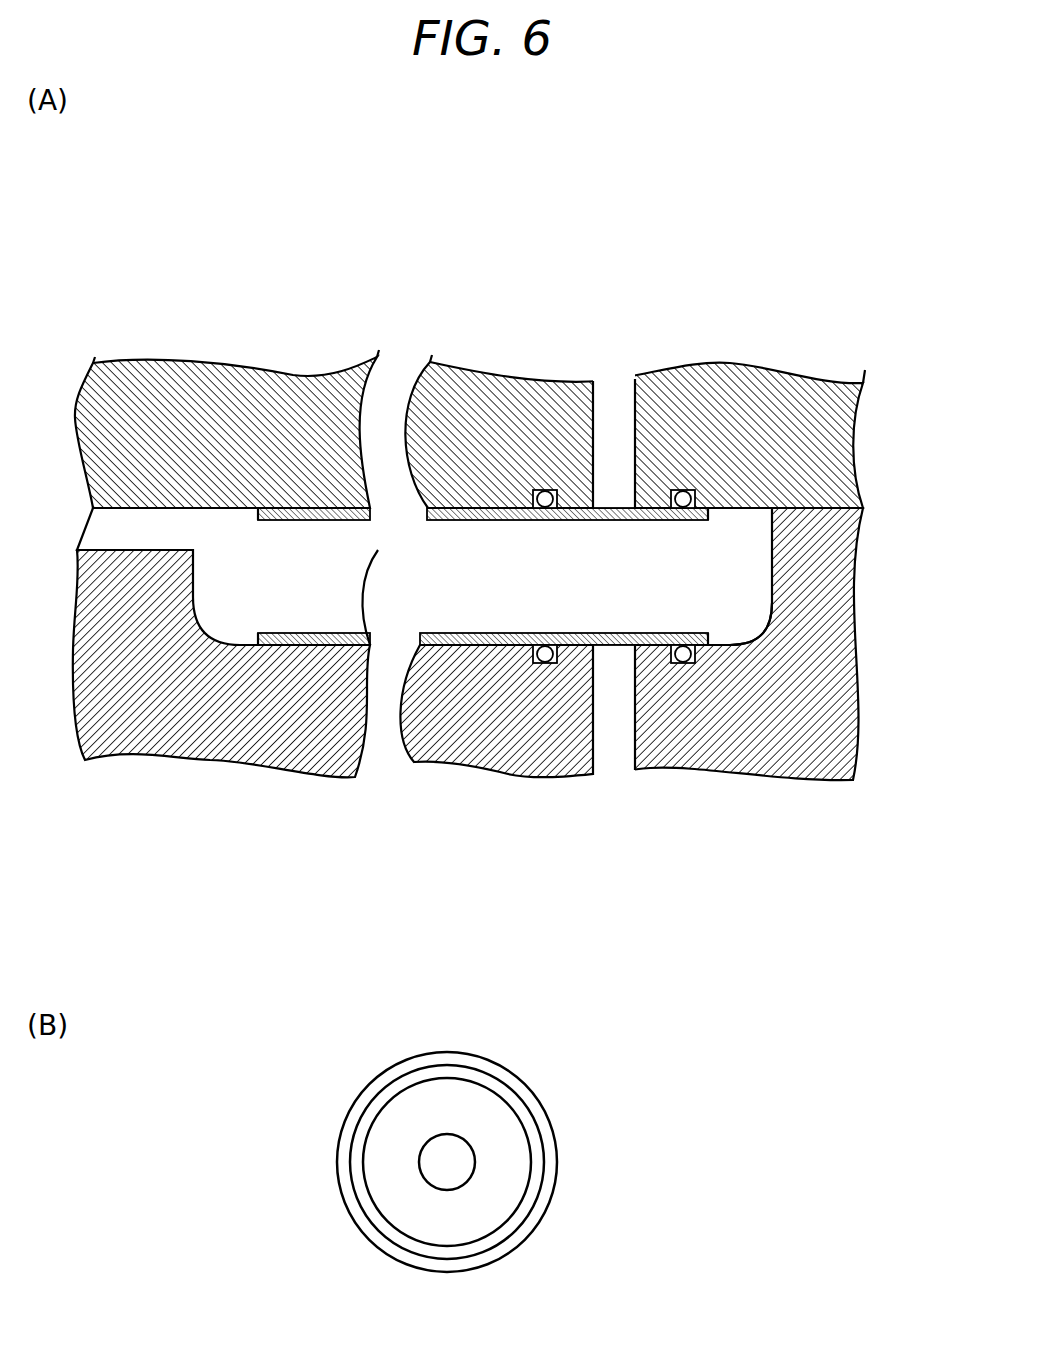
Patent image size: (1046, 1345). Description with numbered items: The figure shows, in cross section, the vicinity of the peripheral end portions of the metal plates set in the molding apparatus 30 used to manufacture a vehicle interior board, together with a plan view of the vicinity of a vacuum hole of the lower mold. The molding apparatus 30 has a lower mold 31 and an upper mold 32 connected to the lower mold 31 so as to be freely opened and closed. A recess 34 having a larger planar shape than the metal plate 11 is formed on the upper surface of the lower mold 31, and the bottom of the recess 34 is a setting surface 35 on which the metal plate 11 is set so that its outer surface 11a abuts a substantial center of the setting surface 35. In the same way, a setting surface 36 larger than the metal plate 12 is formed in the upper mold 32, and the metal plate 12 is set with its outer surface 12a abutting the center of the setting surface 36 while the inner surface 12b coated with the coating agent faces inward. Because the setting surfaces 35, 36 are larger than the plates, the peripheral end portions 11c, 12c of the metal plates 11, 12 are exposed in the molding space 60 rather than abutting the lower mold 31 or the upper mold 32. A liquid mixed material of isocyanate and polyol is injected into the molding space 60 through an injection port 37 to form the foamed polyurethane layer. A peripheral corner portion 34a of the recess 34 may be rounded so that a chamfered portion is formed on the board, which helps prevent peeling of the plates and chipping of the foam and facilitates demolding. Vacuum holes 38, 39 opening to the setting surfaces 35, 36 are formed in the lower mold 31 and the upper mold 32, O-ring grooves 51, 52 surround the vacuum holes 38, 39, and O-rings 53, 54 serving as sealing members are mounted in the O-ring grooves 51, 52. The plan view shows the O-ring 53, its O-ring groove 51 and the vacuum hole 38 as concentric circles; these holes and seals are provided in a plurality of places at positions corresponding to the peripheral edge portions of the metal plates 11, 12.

The molding apparatus 30 is at (156, 220).
The lower mold 31 is at (500, 768).
The upper mold 32 is at (500, 393).
The recess 34 is at (213, 530).
The peripheral corner portion 34a is at (753, 622).
The setting surface 35 is at (487, 633).
The setting surface 36 is at (773, 533).
The injection port 37 is at (125, 532).
The vacuum hole 38 is at (605, 705).
The vacuum hole 39 is at (614, 440).
The metal plate 11 is at (437, 630).
The outer surface 11a is at (277, 647).
The peripheral end portion 11c is at (230, 640).
The metal plate 12 is at (455, 522).
The outer surface 12a is at (293, 507).
The inner surface 12b is at (325, 520).
The peripheral end portion 12c is at (253, 513).
The O-ring groove 51 is at (700, 659).
The O-ring groove 52 is at (695, 498).
The O-ring 53 is at (545, 633).
The O-ring 54 is at (550, 517).
The molding space 60 is at (528, 564).